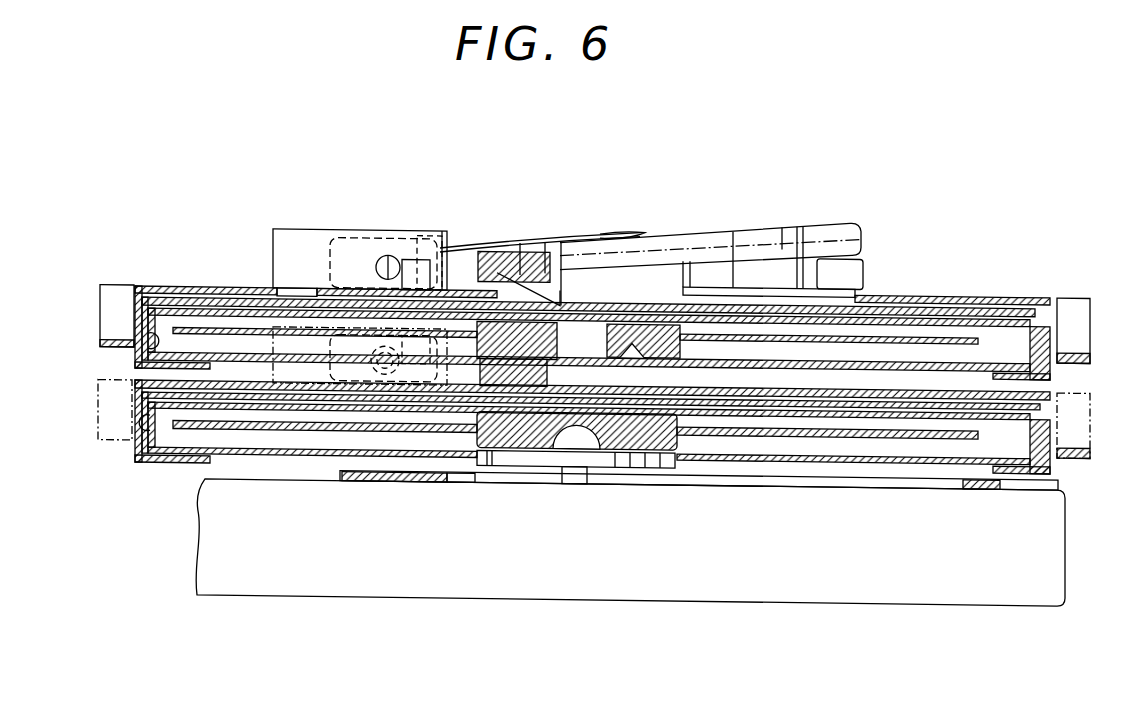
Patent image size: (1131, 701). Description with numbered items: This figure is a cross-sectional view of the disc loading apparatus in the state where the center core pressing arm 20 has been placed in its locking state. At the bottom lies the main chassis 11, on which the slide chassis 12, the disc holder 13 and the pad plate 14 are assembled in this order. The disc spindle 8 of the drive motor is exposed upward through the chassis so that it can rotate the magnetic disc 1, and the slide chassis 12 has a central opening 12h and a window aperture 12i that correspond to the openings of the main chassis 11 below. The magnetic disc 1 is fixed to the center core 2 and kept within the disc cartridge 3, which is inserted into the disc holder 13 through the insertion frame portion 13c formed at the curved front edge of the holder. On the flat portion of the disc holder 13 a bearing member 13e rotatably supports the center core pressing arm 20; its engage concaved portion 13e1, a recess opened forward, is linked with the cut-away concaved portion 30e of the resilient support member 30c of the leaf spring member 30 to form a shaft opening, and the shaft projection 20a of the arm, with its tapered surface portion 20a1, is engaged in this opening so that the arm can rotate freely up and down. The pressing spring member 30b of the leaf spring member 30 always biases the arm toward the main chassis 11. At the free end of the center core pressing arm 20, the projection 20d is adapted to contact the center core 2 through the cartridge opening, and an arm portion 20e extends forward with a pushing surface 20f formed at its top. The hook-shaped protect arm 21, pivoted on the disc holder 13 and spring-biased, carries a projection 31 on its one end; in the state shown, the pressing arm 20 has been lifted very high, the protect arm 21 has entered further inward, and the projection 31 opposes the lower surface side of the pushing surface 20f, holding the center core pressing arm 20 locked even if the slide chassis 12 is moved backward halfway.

The magnetic disc 1 is at (973, 337).
The center core 2 is at (662, 325).
The disc cartridge 3 is at (930, 318).
The disc spindle 8 is at (578, 440).
The main chassis 11 is at (928, 597).
The slide chassis 12 is at (390, 485).
The central opening 12h is at (468, 488).
The window aperture 12i is at (732, 490).
The disc holder 13 is at (185, 289).
The insertion frame portion 13c is at (148, 352).
The bearing member 13e is at (367, 290).
The engage concaved portion 13e1 is at (430, 255).
The pad plate 14 is at (1033, 302).
The center core pressing arm 20 is at (683, 237).
The shaft projection 20a is at (402, 262).
The tapered surface portion 20a1 is at (325, 285).
The projection 20d is at (555, 240).
The arm portion 20e is at (780, 233).
The pushing surface 20f is at (828, 233).
The protect arm 21 is at (733, 247).
The leaf spring member 30 is at (513, 237).
The pressing spring member 30b is at (605, 237).
The resilient support member 30c is at (378, 250).
The cut-away concaved portion 30e is at (372, 250).
The projection 31 is at (843, 273).